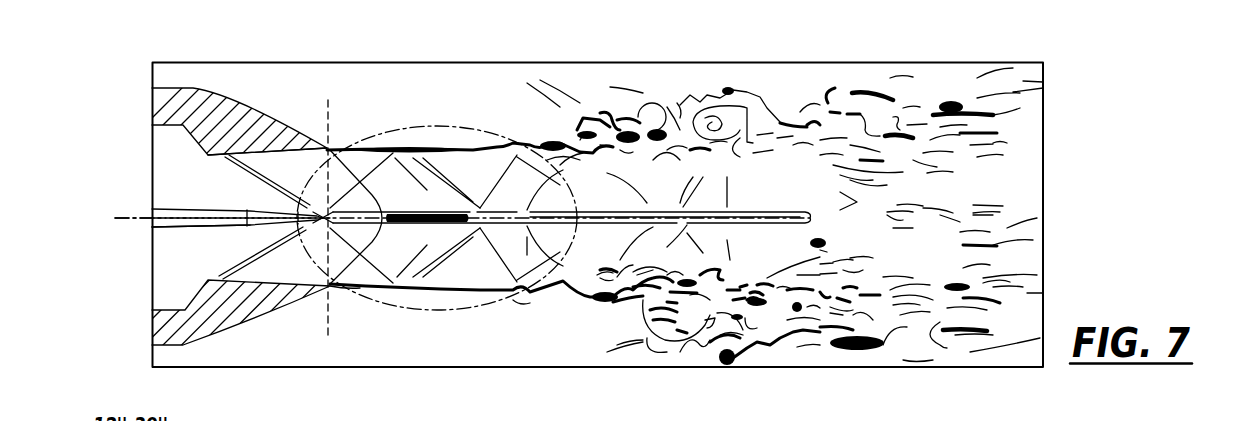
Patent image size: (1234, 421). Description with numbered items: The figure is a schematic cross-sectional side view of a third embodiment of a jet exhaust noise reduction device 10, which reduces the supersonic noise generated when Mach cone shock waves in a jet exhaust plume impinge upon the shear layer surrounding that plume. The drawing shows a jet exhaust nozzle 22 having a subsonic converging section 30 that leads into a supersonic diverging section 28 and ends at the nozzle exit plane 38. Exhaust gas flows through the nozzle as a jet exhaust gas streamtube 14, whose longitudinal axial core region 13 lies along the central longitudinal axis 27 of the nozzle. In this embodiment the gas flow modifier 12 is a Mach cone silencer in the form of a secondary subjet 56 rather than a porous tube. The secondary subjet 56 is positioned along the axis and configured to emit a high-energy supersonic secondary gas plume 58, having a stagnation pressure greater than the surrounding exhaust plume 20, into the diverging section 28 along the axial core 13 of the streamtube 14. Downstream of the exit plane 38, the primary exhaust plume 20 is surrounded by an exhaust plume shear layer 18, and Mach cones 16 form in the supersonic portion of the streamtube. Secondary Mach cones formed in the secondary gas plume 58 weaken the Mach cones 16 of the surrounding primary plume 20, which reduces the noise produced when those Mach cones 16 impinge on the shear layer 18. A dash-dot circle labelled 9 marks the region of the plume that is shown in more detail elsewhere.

The shock cell region 9 is at (405, 126).
The jet exhaust noise reduction device 10 is at (167, 227).
The gas flow modifier 12 is at (164, 207).
The longitudinal axial core region 13 is at (478, 206).
The jet exhaust gas streamtube 14 is at (293, 260).
The Mach cones 16 is at (348, 268).
The exhaust plume shear layer 18 is at (365, 148).
The exhaust plume 20 is at (505, 250).
The jet exhaust nozzle 22 is at (233, 114).
The central longitudinal axis 27 is at (133, 216).
The diverging section 28 is at (252, 153).
The converging section 30 is at (197, 294).
The nozzle exit plane 38 is at (330, 102).
The secondary subjet 56 is at (222, 212).
The secondary gas plume 58 is at (323, 210).